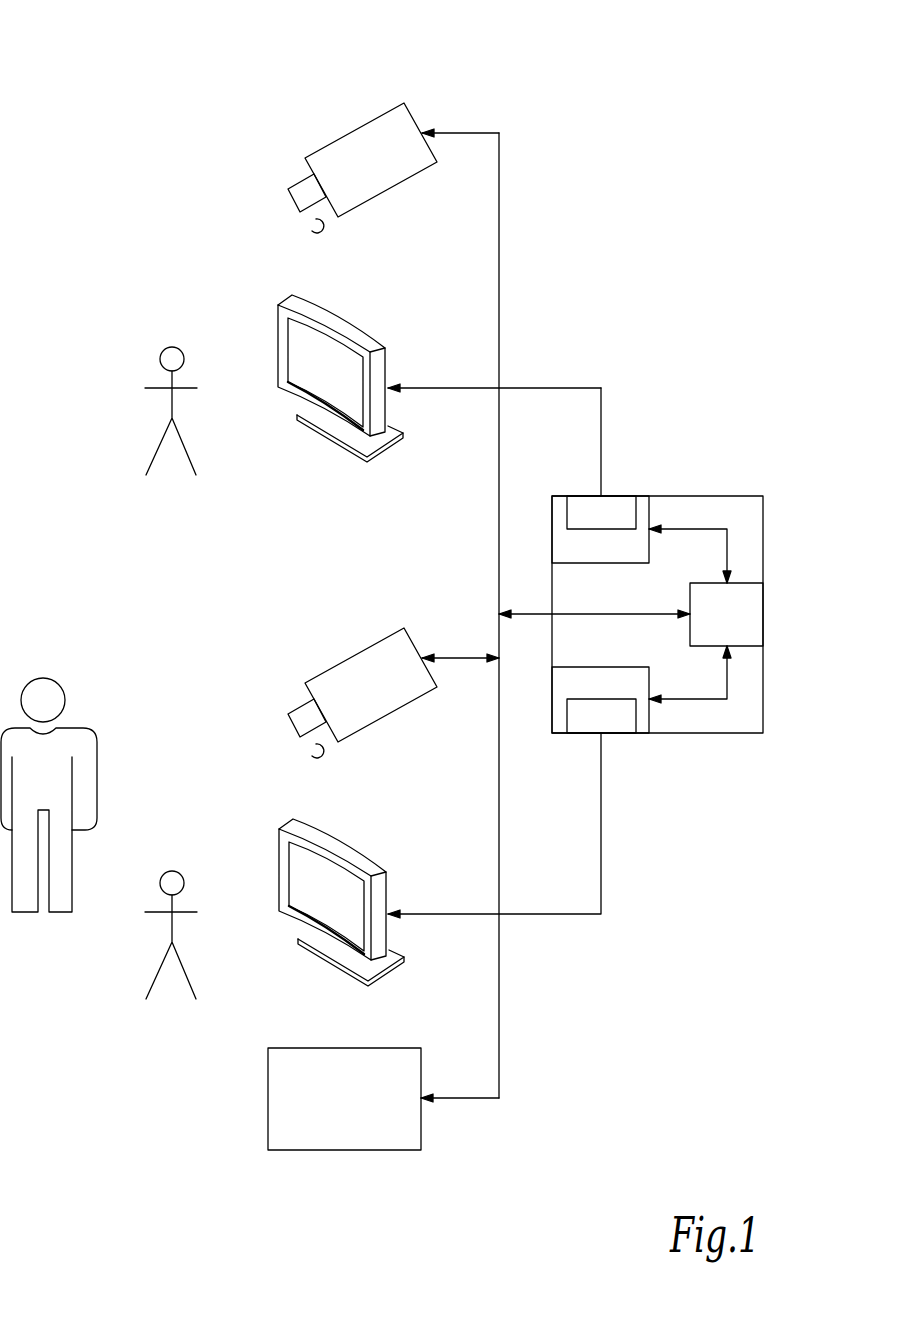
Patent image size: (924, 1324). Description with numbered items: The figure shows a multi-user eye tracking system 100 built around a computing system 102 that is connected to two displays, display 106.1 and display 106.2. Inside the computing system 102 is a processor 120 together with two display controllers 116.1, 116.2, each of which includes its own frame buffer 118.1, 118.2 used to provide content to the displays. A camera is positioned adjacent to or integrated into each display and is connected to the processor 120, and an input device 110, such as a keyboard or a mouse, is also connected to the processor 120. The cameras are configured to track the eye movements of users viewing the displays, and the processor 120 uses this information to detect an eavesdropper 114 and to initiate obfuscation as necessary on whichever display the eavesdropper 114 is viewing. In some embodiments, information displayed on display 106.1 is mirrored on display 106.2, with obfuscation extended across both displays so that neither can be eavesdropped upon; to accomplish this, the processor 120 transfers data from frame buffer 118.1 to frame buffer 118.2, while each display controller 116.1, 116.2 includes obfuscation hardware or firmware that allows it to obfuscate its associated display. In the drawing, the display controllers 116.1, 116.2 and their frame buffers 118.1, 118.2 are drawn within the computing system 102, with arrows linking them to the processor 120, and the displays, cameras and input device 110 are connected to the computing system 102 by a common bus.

The multi-user eye tracking system 100 is at (87, 28).
The computing system 102 is at (748, 496).
The display 106.1 is at (343, 841).
The display 106.2 is at (343, 315).
The input device 110 is at (345, 1048).
The eavesdropper 114 is at (43, 678).
The display controller 116.1 is at (602, 667).
The display controller 116.2 is at (602, 563).
The frame buffer 118.1 is at (617, 723).
The frame buffer 118.2 is at (617, 505).
The processor 120 is at (764, 598).